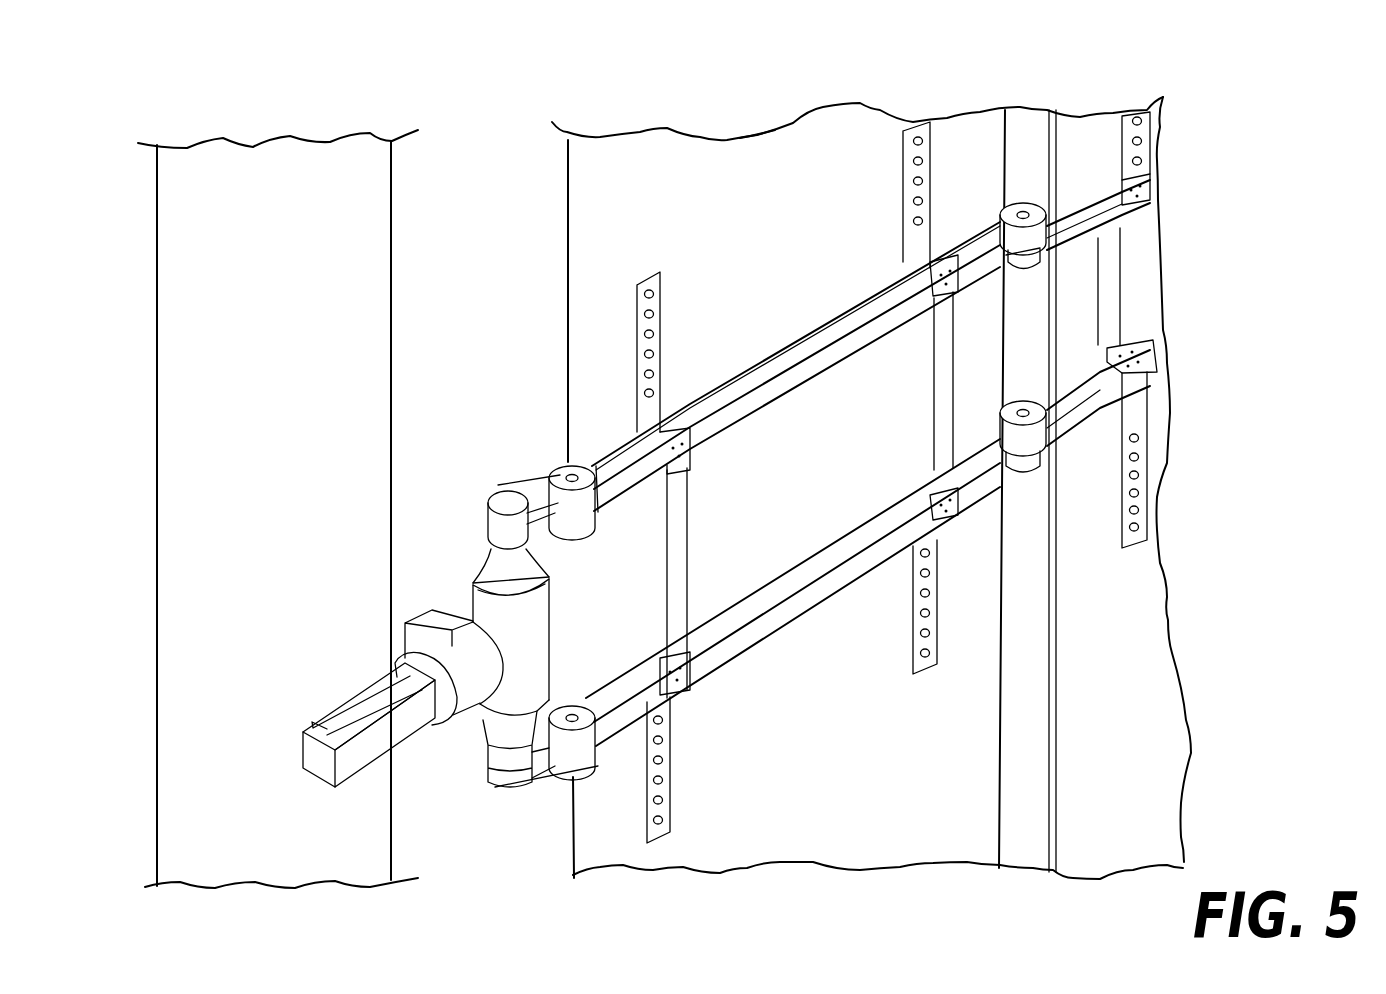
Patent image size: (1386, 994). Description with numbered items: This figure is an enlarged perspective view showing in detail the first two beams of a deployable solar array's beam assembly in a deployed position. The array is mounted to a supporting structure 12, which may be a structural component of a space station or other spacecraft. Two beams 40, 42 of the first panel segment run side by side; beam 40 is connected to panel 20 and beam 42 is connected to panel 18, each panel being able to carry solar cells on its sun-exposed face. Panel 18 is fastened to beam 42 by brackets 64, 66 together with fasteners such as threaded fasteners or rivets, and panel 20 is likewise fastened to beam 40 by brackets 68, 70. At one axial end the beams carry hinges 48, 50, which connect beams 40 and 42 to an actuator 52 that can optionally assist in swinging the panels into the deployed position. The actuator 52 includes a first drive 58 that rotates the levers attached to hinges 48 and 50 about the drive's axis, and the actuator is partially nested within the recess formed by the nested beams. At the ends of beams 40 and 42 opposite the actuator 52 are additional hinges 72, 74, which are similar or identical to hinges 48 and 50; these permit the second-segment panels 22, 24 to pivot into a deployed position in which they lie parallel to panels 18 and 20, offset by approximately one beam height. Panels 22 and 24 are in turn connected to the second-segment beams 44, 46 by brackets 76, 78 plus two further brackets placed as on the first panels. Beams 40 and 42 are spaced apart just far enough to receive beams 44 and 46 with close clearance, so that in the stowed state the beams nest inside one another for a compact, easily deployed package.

The supporting structure 12 is at (276, 134).
The panel 18 is at (773, 833).
The panel 20 is at (800, 148).
The panel 22 is at (1107, 835).
The panel 24 is at (1082, 142).
The beam 40 is at (758, 380).
The beam 42 is at (805, 590).
The beam 44 is at (1113, 216).
The beam 46 is at (1133, 348).
The hinge 48 is at (553, 466).
The hinge 50 is at (562, 750).
The actuator 52 is at (497, 814).
The first drive 58 is at (535, 620).
The bracket 64 is at (690, 682).
The bracket 66 is at (904, 464).
The bracket 68 is at (690, 452).
The bracket 70 is at (948, 265).
The hinge 72 is at (1022, 260).
The hinge 74 is at (996, 433).
The bracket 76 is at (1152, 177).
The bracket 78 is at (1128, 378).